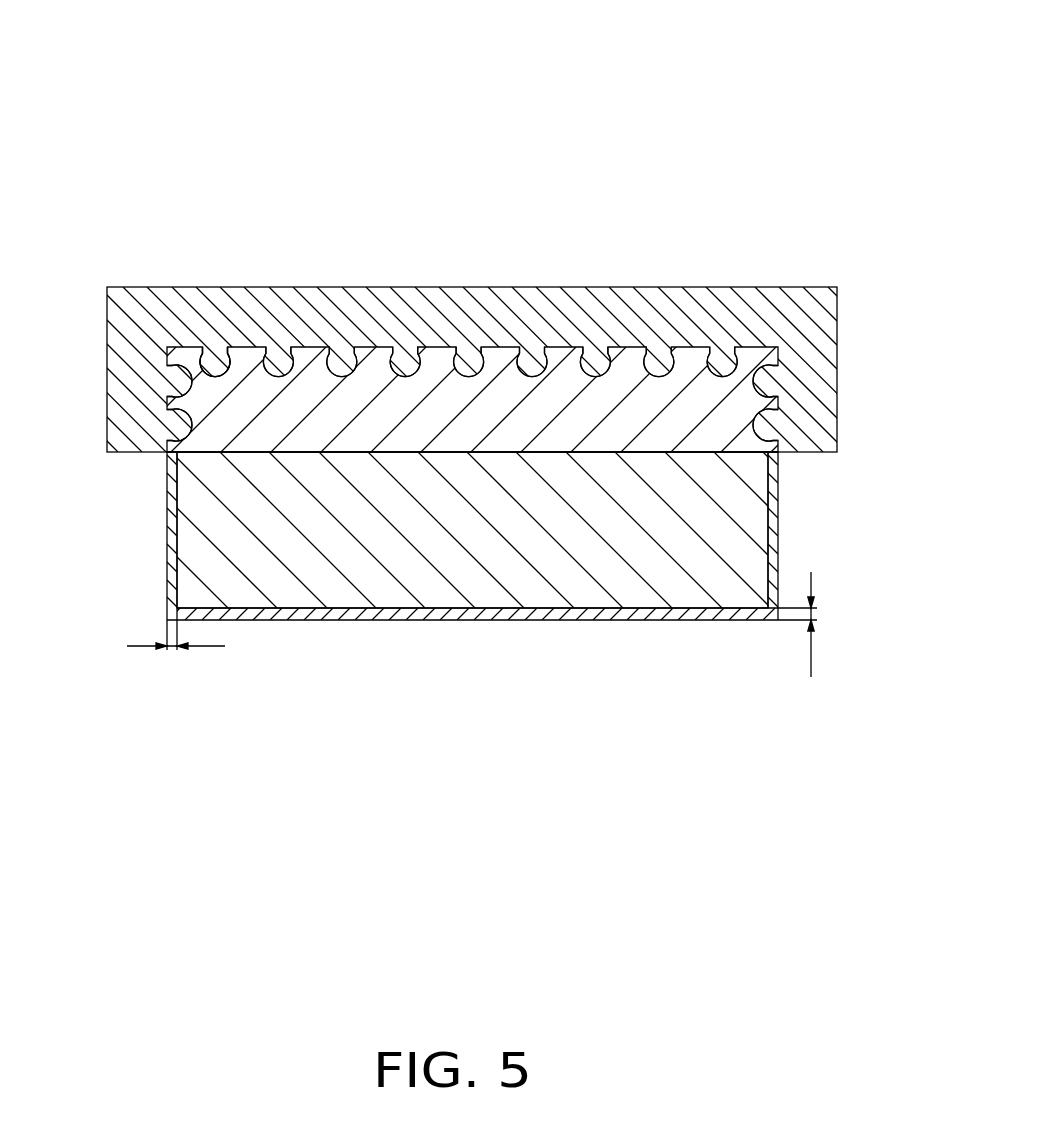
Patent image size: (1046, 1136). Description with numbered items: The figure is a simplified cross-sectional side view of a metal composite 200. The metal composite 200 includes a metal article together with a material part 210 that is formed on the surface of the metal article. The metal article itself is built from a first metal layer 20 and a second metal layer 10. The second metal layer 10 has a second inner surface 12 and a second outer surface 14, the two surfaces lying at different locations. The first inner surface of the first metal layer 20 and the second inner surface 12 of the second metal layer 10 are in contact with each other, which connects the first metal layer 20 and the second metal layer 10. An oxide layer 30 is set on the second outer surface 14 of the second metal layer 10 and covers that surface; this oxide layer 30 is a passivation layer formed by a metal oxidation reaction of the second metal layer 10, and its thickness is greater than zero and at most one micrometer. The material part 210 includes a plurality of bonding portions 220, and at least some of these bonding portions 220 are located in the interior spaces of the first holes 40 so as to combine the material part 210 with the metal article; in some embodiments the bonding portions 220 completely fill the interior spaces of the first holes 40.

The metal composite 200 is at (496, 346).
The material part 210 is at (792, 311).
The bonding portions 220 is at (722, 363).
The first metal layer 20 is at (742, 408).
The first holes 40 is at (206, 362).
The second metal layer 10 is at (738, 492).
The second inner surface 12 is at (212, 453).
The second outer surface 14 is at (172, 535).
The oxide layer 30 is at (775, 538).